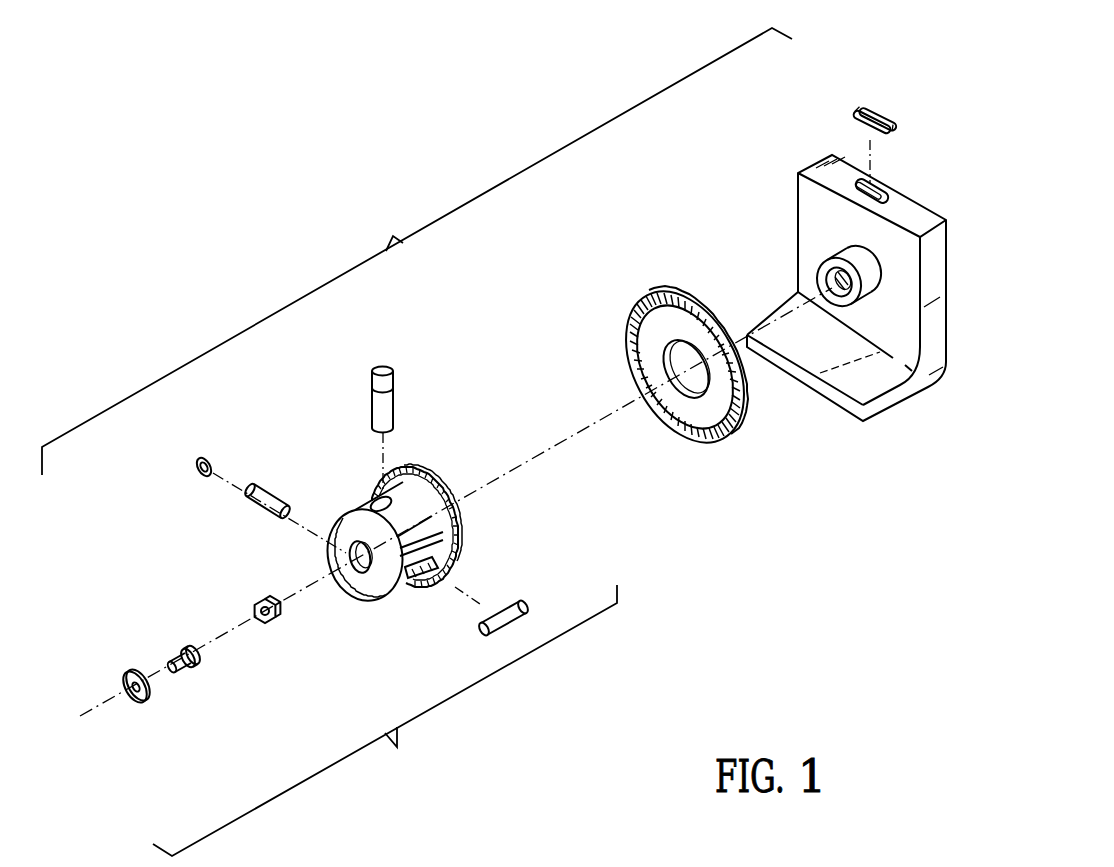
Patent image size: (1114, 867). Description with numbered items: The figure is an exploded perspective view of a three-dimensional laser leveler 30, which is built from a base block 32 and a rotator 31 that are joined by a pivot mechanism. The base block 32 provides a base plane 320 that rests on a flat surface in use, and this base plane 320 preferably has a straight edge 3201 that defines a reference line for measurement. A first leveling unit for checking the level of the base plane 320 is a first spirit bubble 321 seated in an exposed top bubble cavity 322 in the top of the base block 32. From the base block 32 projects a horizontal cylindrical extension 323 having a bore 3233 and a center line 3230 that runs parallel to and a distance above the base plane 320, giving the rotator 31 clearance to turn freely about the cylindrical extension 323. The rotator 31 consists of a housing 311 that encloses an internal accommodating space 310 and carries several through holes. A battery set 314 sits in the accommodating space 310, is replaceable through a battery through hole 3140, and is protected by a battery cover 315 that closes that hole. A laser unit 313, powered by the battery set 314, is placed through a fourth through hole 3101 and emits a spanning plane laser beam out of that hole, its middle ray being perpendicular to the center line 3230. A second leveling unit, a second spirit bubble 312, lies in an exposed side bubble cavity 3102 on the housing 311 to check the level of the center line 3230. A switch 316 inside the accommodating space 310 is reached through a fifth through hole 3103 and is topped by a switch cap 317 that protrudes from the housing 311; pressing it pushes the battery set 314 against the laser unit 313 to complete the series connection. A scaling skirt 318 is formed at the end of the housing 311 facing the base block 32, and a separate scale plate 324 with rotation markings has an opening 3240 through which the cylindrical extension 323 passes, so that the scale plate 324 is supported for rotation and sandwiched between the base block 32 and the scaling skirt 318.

The 3D laser leveler 30 is at (417, 251).
The rotator 31 is at (367, 587).
The internal accommodating space 310 is at (417, 462).
The fourth through hole 3101 is at (372, 498).
The side bubble cavity 3102 is at (413, 588).
The fifth through hole 3103 is at (366, 572).
The battery through hole 3140 is at (346, 556).
The housing 311 is at (465, 516).
The second spirit bubble 312 is at (524, 606).
The laser unit 313 is at (372, 383).
The battery set 314 is at (266, 488).
The battery cover 315 is at (212, 458).
The switch 316 is at (272, 626).
The switch cap 317 is at (176, 652).
The scaling skirt 318 is at (460, 538).
The base block 32 is at (976, 187).
The base plane 320 is at (846, 337).
The straight edge 3201 is at (802, 386).
The first spirit bubble 321 is at (893, 117).
The top bubble cavity 322 is at (890, 184).
The cylindrical extension 323 is at (882, 305).
The center line 3230 is at (797, 284).
The bore 3233 is at (850, 303).
The scale plate 324 is at (682, 388).
The opening 3240 is at (679, 386).